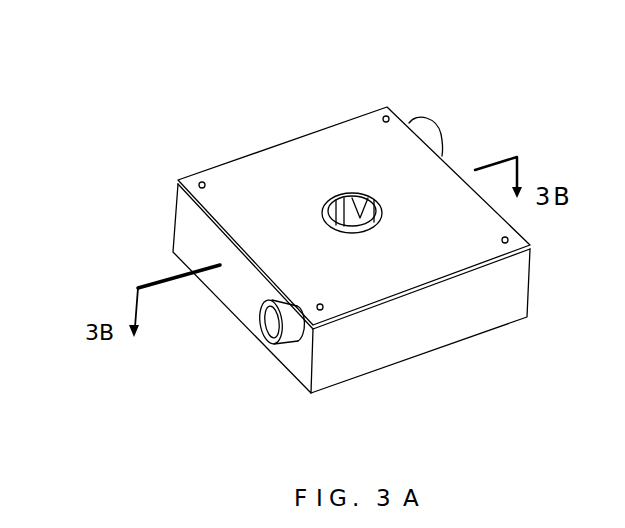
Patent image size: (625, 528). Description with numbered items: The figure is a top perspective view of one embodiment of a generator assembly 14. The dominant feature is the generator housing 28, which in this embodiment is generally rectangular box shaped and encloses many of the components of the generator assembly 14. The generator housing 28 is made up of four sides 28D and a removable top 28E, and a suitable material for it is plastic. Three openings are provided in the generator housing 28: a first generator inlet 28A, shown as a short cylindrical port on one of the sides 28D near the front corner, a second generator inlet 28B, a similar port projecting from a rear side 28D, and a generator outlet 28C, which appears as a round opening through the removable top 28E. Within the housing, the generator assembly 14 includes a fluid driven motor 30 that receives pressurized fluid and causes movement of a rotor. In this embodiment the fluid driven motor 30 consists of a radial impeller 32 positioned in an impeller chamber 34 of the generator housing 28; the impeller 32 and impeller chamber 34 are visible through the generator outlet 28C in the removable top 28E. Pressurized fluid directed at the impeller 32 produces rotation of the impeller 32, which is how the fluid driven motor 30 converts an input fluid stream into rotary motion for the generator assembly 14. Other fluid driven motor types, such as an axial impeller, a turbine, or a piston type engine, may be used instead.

The generator assembly 14 is at (164, 229).
The generator housing 28 is at (220, 156).
The first generator inlet 28A is at (272, 328).
The second generator inlet 28B is at (440, 128).
The generator outlet 28C is at (372, 198).
The sides 28D is at (230, 298).
The removable top 28E is at (252, 162).
The fluid driven motor 30 is at (338, 60).
The radial impeller 32 is at (353, 220).
The impeller chamber 34 is at (342, 220).